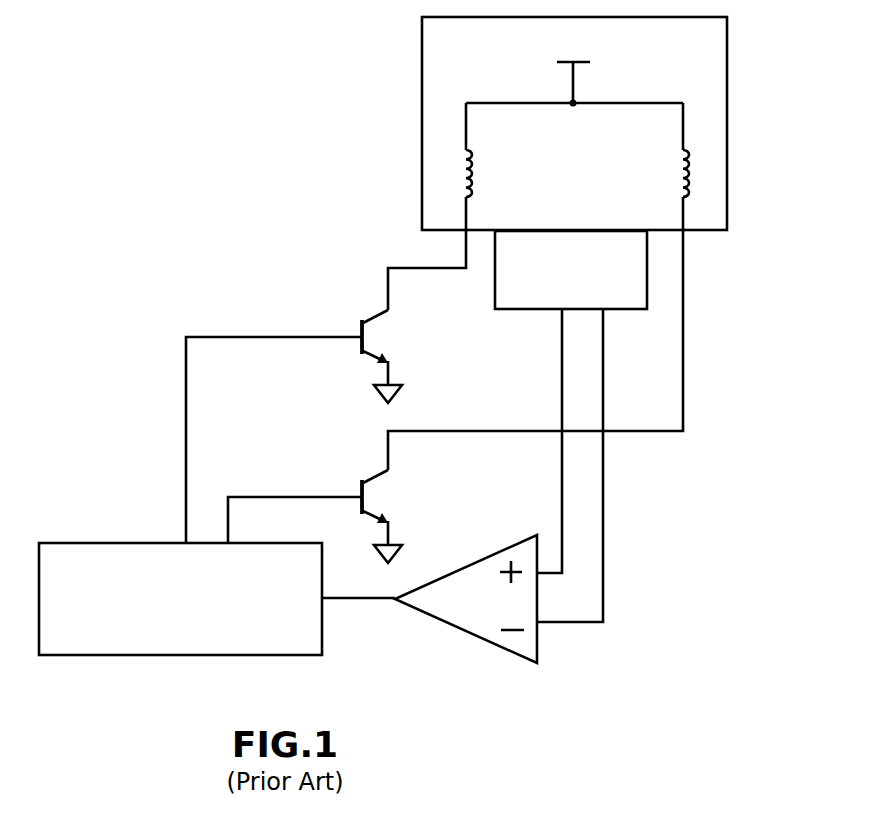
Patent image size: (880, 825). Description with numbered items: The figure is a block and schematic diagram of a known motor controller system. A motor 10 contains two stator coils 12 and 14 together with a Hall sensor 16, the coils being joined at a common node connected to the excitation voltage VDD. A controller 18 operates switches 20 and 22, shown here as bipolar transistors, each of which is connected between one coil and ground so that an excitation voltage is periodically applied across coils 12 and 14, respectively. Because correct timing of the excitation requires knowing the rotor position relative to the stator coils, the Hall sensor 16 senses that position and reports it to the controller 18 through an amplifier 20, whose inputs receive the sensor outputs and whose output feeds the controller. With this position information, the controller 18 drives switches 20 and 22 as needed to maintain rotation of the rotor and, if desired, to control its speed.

The motor 10 is at (728, 55).
The stator coil 12 is at (440, 166).
The stator coil 14 is at (709, 166).
The Hall sensor 16 is at (495, 282).
The controller 18 is at (98, 543).
The switch 20 is at (374, 310).
The switch 22 is at (374, 470).